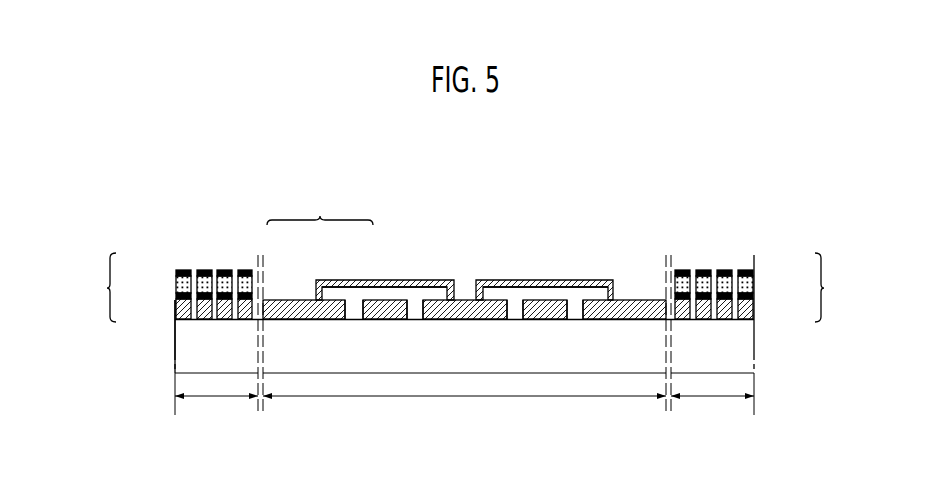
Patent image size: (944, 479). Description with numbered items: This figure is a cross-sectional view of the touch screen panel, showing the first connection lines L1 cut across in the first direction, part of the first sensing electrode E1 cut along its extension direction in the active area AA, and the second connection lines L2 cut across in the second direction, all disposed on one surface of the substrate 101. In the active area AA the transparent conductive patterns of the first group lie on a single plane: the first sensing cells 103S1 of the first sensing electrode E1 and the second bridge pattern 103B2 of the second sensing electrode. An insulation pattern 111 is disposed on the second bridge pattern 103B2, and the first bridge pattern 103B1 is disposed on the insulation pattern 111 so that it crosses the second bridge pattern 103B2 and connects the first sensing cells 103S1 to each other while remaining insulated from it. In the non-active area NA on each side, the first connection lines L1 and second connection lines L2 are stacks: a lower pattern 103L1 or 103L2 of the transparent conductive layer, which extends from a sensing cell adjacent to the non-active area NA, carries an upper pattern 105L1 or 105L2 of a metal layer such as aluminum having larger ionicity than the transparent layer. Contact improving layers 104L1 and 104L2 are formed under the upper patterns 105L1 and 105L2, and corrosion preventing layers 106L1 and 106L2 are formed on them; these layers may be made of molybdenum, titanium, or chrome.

The substrate 101 is at (754, 350).
The lower pattern of the first connection line 103L1 is at (176, 310).
The contact improving layer 104L1 is at (176, 297).
The upper pattern of the first connection line 105L1 is at (176, 285).
The corrosion preventing layer 106L1 is at (176, 272).
The lower pattern of the second connection line 103L2 is at (754, 310).
The contact improving layer 104L2 is at (754, 297).
The upper pattern of the second connection line 105L2 is at (754, 285).
The corrosion preventing layer 106L2 is at (754, 272).
The first sensing cells 103S1 is at (283, 300).
The first bridge pattern 103B1 is at (335, 282).
The second bridge pattern 103B2 is at (392, 300).
The insulation pattern 111 is at (437, 292).
The first sensing electrode E1 is at (320, 211).
The first connection lines L1 is at (106, 287).
The second connection lines L2 is at (825, 287).
The non-active area NA is at (464, 395).
The active area AA is at (464, 395).